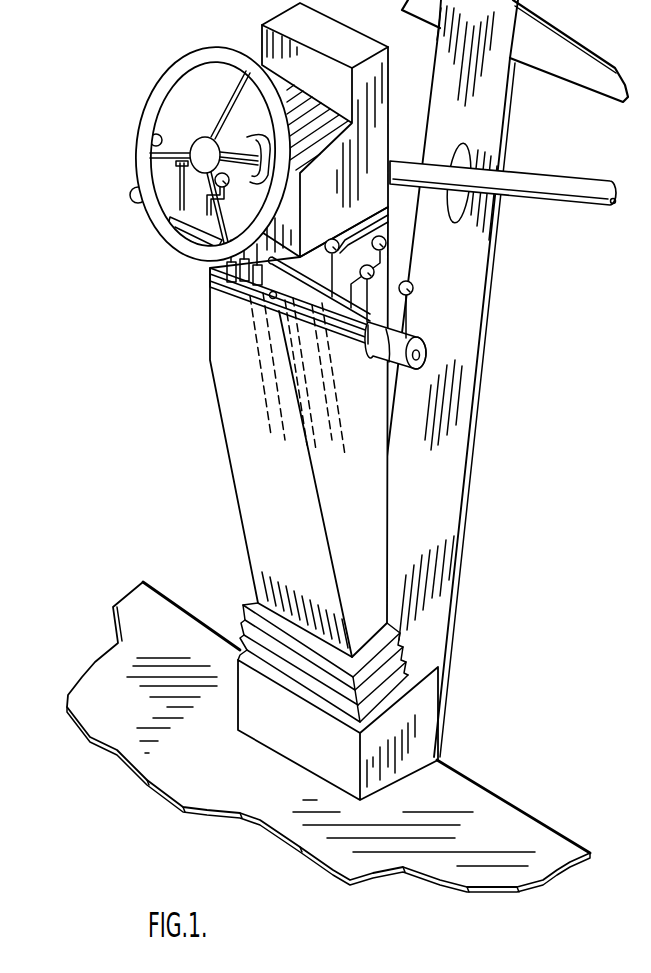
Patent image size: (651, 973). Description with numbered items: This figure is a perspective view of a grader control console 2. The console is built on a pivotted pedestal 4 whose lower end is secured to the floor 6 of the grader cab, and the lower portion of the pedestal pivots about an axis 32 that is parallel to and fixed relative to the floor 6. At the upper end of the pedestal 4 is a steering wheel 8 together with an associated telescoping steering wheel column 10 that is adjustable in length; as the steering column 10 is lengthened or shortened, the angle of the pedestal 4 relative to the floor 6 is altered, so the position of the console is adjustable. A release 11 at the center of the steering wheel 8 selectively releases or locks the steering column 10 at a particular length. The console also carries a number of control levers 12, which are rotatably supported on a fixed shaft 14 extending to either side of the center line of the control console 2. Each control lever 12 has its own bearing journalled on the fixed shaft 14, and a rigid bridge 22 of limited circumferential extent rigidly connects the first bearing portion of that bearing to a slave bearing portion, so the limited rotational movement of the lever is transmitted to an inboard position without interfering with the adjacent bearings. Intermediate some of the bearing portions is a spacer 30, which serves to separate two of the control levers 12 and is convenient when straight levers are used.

The control console 2 is at (78, 98).
The pivotted pedestal 4 is at (371, 478).
The floor 6 is at (457, 787).
The steering wheel 8 is at (156, 100).
The telescoping steering wheel column 10 is at (550, 194).
The release 11 is at (202, 157).
The control levers 12 is at (386, 268).
The fixed shaft 14 is at (427, 357).
The rigid bridge 22 is at (333, 323).
The spacer 30 is at (378, 346).
The pivot axis 32 is at (243, 508).